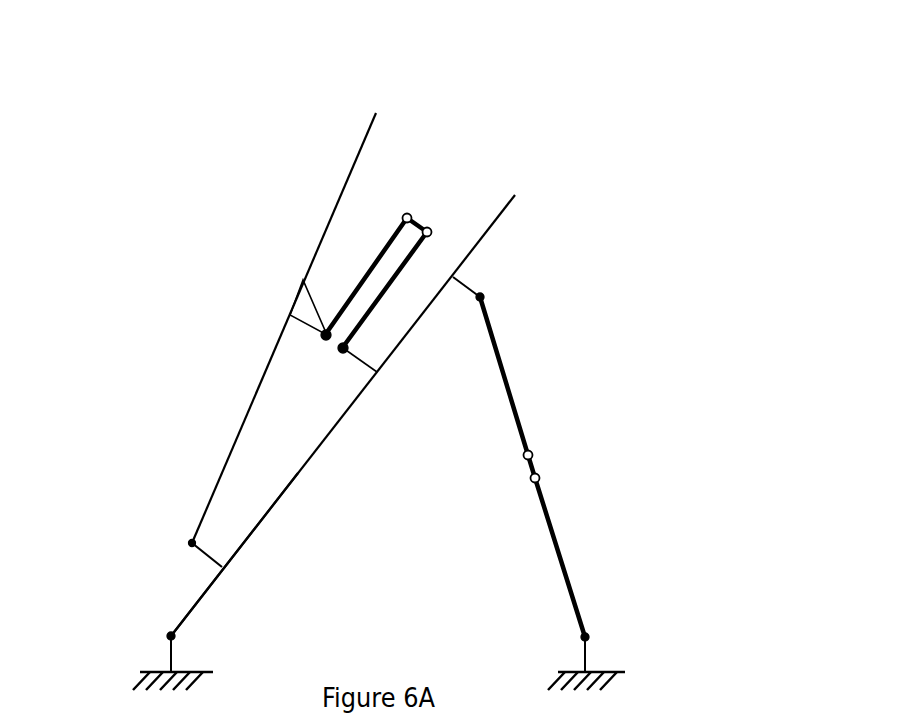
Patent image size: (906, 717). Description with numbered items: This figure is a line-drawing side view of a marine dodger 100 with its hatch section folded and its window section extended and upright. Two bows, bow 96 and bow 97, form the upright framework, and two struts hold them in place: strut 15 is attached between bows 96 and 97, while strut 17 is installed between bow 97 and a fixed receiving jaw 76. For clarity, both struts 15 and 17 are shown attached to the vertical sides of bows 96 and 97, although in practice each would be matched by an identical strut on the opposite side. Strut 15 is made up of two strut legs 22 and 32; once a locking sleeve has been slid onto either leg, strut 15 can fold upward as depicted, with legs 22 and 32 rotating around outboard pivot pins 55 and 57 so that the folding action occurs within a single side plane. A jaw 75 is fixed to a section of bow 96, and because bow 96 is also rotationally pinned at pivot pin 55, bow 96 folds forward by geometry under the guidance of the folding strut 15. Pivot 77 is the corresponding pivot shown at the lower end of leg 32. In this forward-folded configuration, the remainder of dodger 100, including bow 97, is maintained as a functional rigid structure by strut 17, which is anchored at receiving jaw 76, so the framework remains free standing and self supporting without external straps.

The dodger 100 is at (190, 237).
The bow 96 is at (337, 207).
The strut leg 32 is at (426, 255).
The bow 97 is at (298, 473).
The strut 15 is at (468, 153).
The strut 17 is at (553, 403).
The strut leg 22 is at (370, 270).
The jaw 75 is at (303, 280).
The outboard pivot pin 55 is at (323, 335).
The pivot 77 is at (358, 360).
The outboard pivot pin 57 is at (351, 357).
The receiving jaw 76 is at (585, 650).